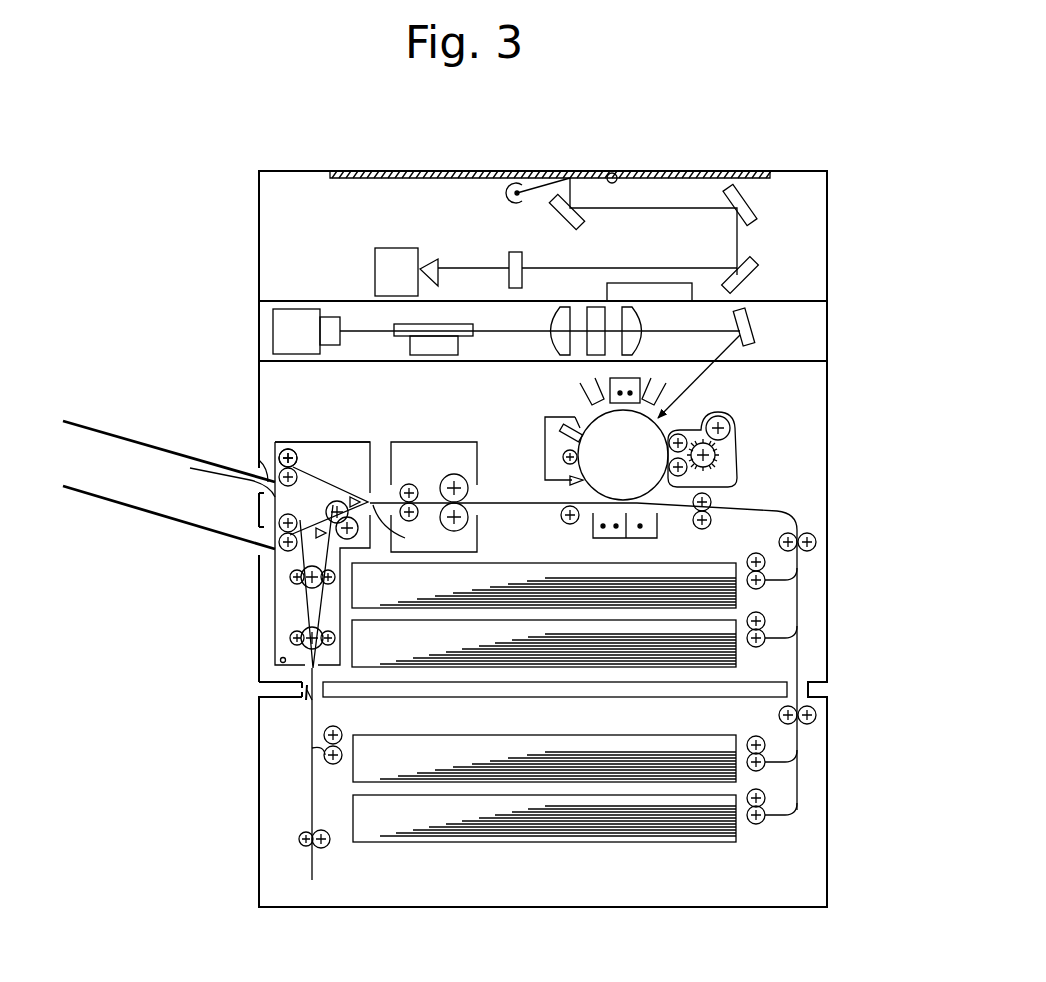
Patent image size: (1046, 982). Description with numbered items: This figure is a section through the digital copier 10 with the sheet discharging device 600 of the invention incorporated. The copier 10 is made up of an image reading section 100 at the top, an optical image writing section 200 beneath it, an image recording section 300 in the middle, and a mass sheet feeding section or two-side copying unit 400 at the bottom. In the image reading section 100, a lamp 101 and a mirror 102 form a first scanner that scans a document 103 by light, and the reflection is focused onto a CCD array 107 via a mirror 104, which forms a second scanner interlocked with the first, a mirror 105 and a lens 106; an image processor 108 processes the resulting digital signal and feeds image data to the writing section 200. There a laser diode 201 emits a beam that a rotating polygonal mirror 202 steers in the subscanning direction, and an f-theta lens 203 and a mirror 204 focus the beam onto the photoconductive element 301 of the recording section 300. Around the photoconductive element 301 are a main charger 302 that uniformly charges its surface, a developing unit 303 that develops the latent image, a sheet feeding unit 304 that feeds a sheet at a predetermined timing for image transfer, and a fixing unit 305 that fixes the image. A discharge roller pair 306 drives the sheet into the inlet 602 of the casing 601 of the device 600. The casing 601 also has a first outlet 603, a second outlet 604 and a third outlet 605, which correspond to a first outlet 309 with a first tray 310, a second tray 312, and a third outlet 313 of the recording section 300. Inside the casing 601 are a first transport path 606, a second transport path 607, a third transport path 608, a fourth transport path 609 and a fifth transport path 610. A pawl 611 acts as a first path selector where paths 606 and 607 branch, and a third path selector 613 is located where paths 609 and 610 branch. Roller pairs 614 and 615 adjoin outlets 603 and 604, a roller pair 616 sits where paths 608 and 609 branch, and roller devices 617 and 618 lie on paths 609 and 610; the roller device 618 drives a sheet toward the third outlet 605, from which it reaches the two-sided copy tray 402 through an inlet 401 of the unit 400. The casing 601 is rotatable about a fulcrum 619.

The digital copier 10 is at (764, 134).
The image reading section 100 is at (835, 210).
The lamp 101 is at (508, 199).
The mirror 102 is at (583, 222).
The document 103 is at (613, 173).
The mirror 104 is at (757, 207).
The mirror 105 is at (755, 263).
The lens 106 is at (515, 252).
The CCD array 107 is at (398, 248).
The image processor 108 is at (607, 291).
The optical image writing section 200 is at (835, 340).
The laser diode 201 is at (273, 318).
The polygonal mirror 202 is at (472, 326).
The f-theta lens 203 is at (645, 324).
The mirror 204 is at (760, 332).
The image recording section 300 is at (835, 536).
The photoconductive element 301 is at (584, 420).
The main charger 302 is at (630, 378).
The developing unit 303 is at (741, 450).
The sheet feeding unit 304 is at (737, 559).
The fixing unit 305 is at (464, 442).
The discharge roller pair 306 is at (410, 484).
The first outlet 309 is at (258, 468).
The first tray 310 is at (118, 432).
The second tray 312 is at (99, 494).
The third outlet 313 is at (307, 703).
The mass sheet feeding section or two-side copying unit 400 is at (835, 785).
The inlet 401 is at (317, 690).
The two-sided copy tray 402 is at (555, 726).
The sheet discharging device 600 is at (293, 438).
The casing 601 is at (315, 440).
The inlet 602 is at (406, 525).
The first outlet 603 is at (279, 474).
The second outlet 604 is at (275, 510).
The third outlet 605 is at (303, 684).
The first transport path 606 is at (298, 447).
The second transport path 607 is at (352, 563).
The third transport path 608 is at (326, 502).
The fourth transport path 609 is at (544, 643).
The fifth transport path 610 is at (275, 552).
The pawl (first path selector) 611 is at (372, 493).
The third path selector 613 is at (310, 592).
The roller pair 614 is at (279, 452).
The roller pair 615 is at (210, 476).
The roller pair 616 is at (337, 501).
The roller device 617 is at (290, 577).
The roller device 618 is at (290, 638).
The fulcrum 619 is at (283, 660).